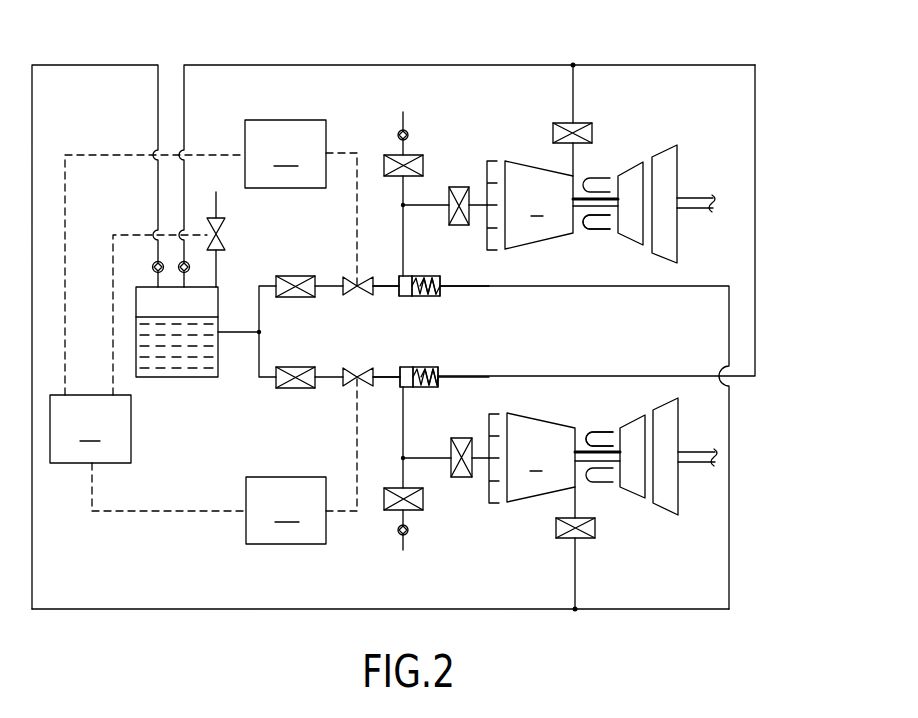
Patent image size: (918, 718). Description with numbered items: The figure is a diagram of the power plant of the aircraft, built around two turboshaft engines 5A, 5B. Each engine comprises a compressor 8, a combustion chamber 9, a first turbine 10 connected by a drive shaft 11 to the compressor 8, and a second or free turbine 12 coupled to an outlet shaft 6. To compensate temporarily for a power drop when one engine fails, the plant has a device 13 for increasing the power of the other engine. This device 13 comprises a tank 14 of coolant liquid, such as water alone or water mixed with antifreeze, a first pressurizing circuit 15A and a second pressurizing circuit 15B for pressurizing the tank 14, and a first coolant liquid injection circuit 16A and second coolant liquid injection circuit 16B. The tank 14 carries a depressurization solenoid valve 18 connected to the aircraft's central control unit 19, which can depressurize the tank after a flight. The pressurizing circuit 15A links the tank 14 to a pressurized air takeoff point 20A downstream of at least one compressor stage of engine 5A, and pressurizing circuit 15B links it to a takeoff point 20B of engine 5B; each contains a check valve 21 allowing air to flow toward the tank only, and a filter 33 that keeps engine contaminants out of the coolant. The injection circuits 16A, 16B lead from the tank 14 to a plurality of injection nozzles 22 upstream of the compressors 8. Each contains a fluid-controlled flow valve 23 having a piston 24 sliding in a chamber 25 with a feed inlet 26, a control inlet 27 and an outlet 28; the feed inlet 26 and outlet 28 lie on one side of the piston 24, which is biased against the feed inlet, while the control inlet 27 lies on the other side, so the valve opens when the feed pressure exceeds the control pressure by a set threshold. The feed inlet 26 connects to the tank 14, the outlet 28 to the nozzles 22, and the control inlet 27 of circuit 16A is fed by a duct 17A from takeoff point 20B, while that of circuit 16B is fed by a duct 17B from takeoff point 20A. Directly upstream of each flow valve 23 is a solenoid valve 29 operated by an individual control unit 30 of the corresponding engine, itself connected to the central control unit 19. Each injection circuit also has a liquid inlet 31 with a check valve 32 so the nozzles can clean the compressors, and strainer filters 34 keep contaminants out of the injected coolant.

The first turboshaft engine 5A is at (632, 112).
The second turboshaft engine 5B is at (636, 548).
The outlet shaft 6 is at (708, 208).
The compressor 8 is at (540, 331).
The combustion chamber 9 is at (597, 229).
The first turbine 10 is at (627, 240).
The drive shaft 11 is at (581, 207).
The second turbine 12 is at (660, 154).
The device for temporarily increasing power 13 is at (495, 308).
The tank 14 is at (207, 378).
The first pressurizing circuit 15A is at (278, 64).
The second pressurizing circuit 15B is at (280, 611).
The first coolant liquid injection circuit 16A is at (259, 287).
The second coolant liquid injection circuit 16B is at (259, 378).
The duct 17A is at (729, 413).
The duct 17B is at (755, 270).
The depressurization solenoid valve 18 is at (219, 231).
The central control unit 19 is at (148, 333).
The pressurized air takeoff point 20A is at (576, 178).
The pressurized air takeoff point 20B is at (576, 486).
The check valve 21 is at (179, 262).
The injection nozzles 22 is at (488, 161).
The flow valve 23 is at (420, 296).
The piston 24 is at (413, 279).
The chamber 25 is at (435, 297).
The feed inlet 26 is at (399, 292).
The control inlet 27 is at (441, 287).
The outlet 28 is at (399, 283).
The solenoid valve 29 is at (351, 282).
The individual control unit 30 is at (301, 332).
The liquid inlet 31 is at (404, 112).
The check valve 32 is at (408, 134).
The filter 33 is at (553, 134).
The strainer filters 34 is at (296, 298).